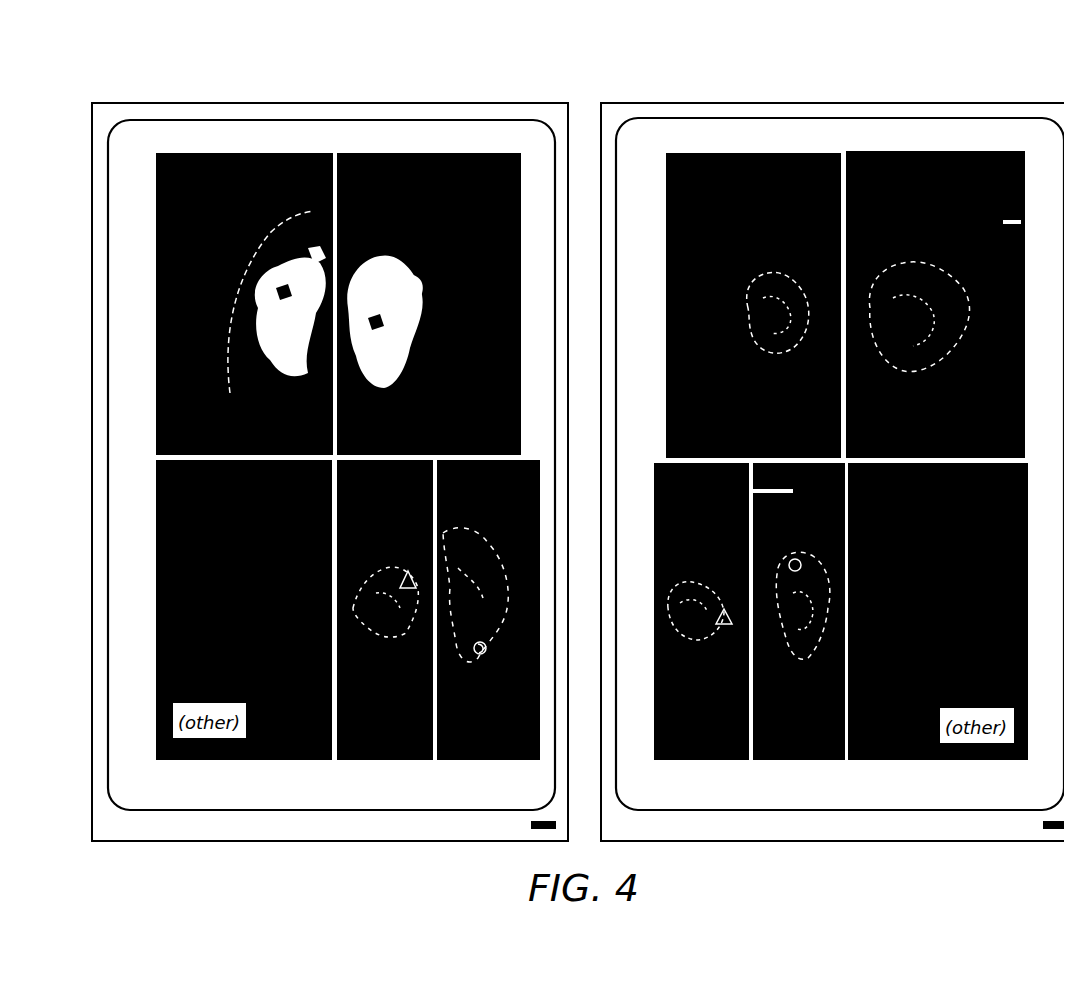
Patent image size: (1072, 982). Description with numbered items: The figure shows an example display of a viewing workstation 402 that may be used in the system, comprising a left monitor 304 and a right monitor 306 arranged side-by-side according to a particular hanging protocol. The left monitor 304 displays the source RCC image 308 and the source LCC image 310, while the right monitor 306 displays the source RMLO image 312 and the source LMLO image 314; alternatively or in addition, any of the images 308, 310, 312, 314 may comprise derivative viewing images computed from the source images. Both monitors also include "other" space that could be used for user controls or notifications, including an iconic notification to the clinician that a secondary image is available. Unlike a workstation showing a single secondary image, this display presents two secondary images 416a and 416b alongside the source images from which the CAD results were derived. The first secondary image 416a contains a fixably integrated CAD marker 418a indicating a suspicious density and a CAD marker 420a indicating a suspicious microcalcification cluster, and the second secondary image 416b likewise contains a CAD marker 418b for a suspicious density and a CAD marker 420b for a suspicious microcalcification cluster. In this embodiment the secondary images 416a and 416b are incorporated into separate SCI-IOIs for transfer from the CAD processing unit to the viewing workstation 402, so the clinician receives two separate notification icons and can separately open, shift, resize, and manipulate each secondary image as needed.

The left monitor 304 is at (322, 95).
The right monitor 306 is at (830, 95).
The viewing workstation 402 is at (576, 70).
The source RCC image 308 is at (244, 304).
The source LCC image 310 is at (429, 304).
The source RMLO image 312 is at (753, 305).
The source LMLO image 314 is at (935, 304).
The secondary image 416a is at (385, 610).
The secondary image 416b is at (701, 611).
The CAD marker 418a is at (392, 556).
The CAD marker 418b is at (724, 616).
The CAD marker 420a is at (448, 646).
The CAD marker 420b is at (806, 534).